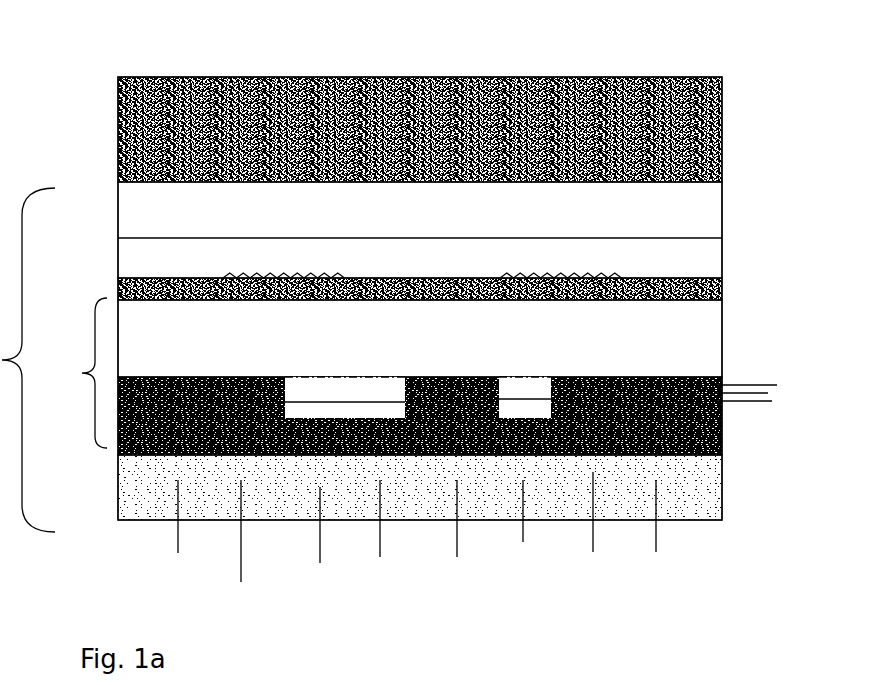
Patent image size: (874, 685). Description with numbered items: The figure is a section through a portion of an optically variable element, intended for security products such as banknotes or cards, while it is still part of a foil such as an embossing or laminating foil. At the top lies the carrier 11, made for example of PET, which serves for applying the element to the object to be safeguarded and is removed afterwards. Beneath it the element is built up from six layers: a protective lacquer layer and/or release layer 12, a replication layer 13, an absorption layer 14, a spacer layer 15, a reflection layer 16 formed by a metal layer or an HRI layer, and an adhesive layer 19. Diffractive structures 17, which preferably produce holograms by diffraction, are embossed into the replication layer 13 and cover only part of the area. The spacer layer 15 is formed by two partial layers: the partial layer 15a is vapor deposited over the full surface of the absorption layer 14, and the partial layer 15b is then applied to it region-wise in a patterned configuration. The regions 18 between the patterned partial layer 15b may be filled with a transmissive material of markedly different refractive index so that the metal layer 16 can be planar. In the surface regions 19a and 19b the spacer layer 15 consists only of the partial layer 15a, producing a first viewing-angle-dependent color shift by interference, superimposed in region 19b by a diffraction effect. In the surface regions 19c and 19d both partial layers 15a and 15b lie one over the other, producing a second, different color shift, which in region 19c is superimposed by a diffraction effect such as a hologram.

The carrier 11 is at (673, 167).
The protective lacquer layer and/or release layer 12 is at (118, 225).
The replication layer 13 is at (692, 242).
The absorption layer 14 is at (118, 288).
The spacer layer 15 is at (74, 373).
The partial layer 15a is at (692, 322).
The partial layer 15b is at (318, 392).
The reflection layer 16 is at (118, 437).
The diffractive structures 17 is at (287, 264).
The regions 18 is at (764, 388).
The adhesive layer 19 is at (683, 480).
The surface region 19a is at (417, 538).
The surface region 19b is at (420, 542).
The surface region 19c is at (419, 538).
The surface region 19d is at (376, 534).